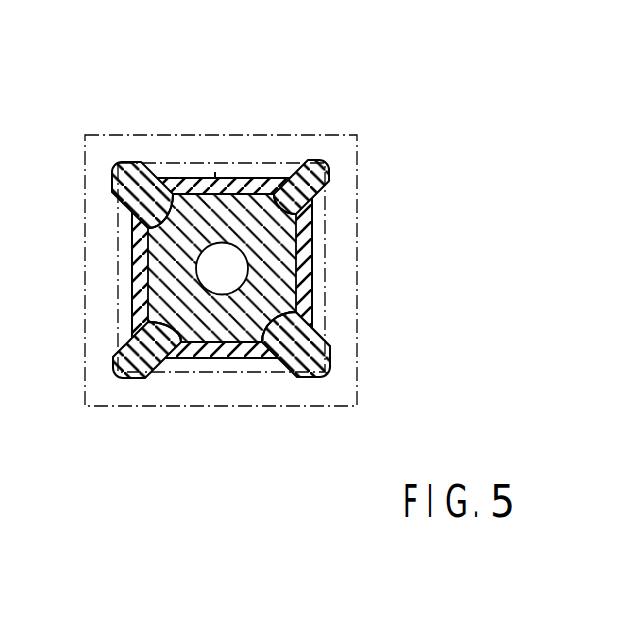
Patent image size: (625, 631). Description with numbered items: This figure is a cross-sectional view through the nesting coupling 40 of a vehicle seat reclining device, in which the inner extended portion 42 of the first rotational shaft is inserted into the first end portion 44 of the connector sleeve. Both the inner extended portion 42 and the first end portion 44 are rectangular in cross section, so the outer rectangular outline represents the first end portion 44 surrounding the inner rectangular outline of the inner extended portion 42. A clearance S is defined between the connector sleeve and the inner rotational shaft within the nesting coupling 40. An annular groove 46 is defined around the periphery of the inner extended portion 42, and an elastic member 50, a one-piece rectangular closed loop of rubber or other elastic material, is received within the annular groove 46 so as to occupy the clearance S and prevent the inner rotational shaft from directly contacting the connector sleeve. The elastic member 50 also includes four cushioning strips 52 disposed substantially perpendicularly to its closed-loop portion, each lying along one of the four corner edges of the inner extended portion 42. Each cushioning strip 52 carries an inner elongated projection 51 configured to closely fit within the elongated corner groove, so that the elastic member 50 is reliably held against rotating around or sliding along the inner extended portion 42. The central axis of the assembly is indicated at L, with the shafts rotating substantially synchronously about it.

The nesting coupling 40 is at (167, 102).
The inner extended portion 42 is at (212, 322).
The first end portion 44 is at (242, 143).
The annular groove 46 is at (140, 278).
The elastic member 50 is at (312, 232).
The inner elongated projection 51 is at (157, 212).
The cushioning strip 52 is at (120, 166).
The clearance S is at (215, 172).
The center hole axis L is at (223, 270).